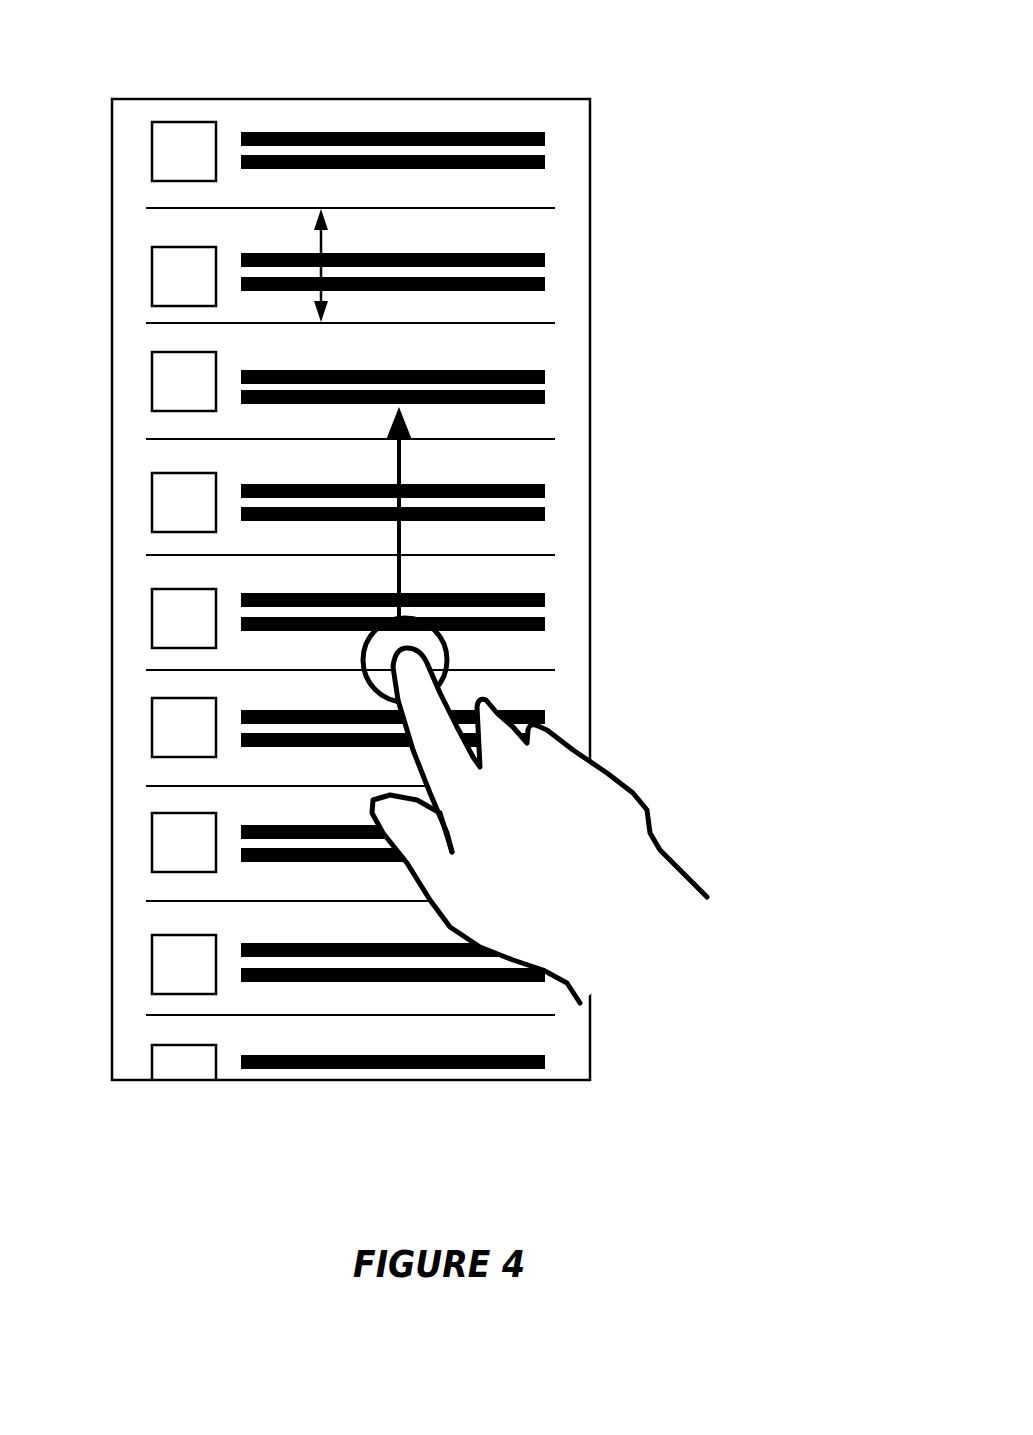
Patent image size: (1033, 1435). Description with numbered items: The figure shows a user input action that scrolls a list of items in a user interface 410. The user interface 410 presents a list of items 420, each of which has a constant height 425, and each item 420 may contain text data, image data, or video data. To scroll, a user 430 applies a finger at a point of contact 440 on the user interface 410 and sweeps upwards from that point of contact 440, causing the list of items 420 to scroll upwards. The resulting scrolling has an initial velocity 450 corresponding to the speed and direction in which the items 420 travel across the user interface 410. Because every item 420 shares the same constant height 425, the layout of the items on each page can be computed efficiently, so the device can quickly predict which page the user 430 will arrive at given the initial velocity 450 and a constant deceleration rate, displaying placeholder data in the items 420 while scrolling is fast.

The user interface 410 is at (558, 99).
The list of items 420 is at (533, 270).
The constant height 425 is at (345, 265).
The user 430 is at (600, 833).
The point of contact 440 is at (413, 640).
The initial velocity 450 is at (403, 423).